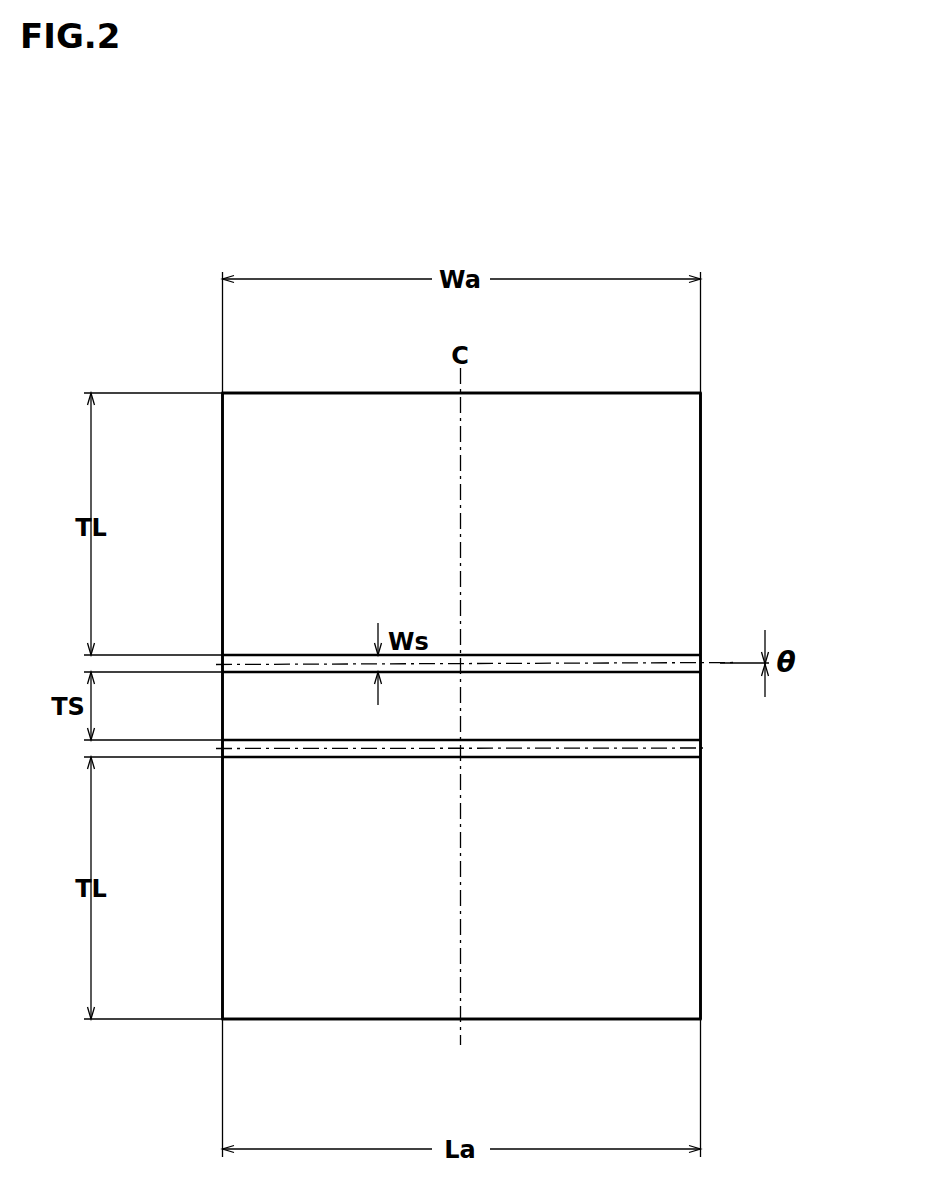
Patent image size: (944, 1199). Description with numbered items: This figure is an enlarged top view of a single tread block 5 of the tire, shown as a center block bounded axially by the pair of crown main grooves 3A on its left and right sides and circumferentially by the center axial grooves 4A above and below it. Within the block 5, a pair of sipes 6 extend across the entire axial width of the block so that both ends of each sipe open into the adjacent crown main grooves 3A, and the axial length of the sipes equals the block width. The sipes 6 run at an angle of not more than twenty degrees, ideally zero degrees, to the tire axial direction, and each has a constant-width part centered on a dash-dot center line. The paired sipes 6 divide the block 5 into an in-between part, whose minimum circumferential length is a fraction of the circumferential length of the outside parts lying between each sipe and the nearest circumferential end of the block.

The block 5 is at (676, 456).
The crown main grooves 3A is at (189, 548).
The center axial grooves 4A is at (614, 352).
The sipes 6 is at (563, 657).